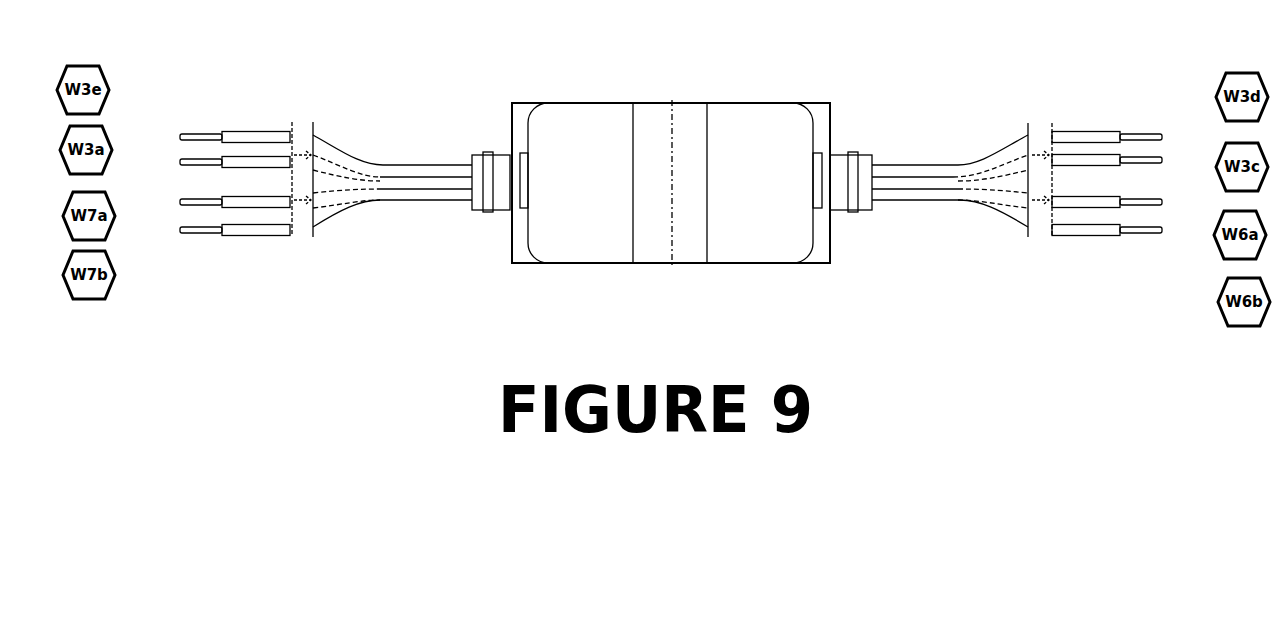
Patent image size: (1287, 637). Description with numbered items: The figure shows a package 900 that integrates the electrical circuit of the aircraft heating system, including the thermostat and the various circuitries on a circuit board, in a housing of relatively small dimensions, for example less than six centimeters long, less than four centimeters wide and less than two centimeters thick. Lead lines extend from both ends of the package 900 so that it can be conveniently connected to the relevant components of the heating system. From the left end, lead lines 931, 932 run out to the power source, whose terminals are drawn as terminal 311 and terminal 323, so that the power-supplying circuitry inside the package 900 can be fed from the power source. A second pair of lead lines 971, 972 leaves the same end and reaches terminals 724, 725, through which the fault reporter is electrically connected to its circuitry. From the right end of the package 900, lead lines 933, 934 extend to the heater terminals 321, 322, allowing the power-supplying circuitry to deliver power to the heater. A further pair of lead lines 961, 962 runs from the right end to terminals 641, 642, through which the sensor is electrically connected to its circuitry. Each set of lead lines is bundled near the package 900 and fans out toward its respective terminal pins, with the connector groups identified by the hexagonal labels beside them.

The terminal pin 323 is at (212, 136).
The terminal 311 is at (212, 161).
The terminal 724 is at (212, 201).
The terminal 725 is at (212, 229).
The lead line 932 is at (349, 145).
The lead line 931 is at (426, 160).
The wire 971 is at (426, 208).
The wire 972 is at (350, 222).
The package 900 is at (783, 153).
The lead line 933 is at (915, 160).
The lead line 934 is at (985, 148).
The wire 961 is at (916, 208).
The wire 962 is at (988, 217).
The terminal 322 is at (1129, 136).
The terminal 321 is at (1129, 159).
The terminal 641 is at (1129, 201).
The terminal 642 is at (1129, 229).